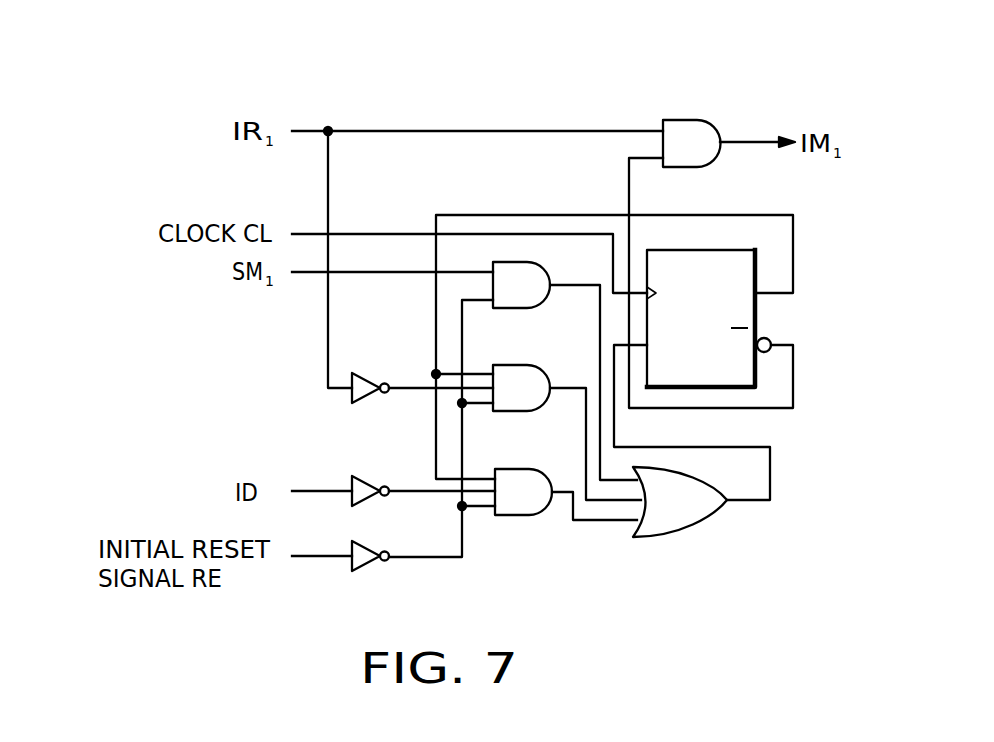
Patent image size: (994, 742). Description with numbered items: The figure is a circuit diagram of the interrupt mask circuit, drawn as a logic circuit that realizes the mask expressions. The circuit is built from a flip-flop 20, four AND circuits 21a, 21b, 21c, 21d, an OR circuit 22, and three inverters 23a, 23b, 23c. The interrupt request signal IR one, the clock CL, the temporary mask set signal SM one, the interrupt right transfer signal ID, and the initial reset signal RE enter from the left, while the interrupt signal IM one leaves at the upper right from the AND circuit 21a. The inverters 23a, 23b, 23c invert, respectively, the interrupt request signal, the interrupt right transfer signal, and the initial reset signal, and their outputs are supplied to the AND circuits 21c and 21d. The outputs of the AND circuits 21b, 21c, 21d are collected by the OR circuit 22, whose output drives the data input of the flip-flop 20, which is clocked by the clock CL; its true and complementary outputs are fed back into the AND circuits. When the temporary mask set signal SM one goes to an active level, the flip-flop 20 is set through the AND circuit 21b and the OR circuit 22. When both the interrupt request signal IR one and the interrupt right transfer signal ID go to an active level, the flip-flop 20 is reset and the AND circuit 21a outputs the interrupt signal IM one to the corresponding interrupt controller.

The flip-flop 20 is at (758, 317).
The AND circuit 21a is at (698, 118).
The AND circuit 21b is at (541, 250).
The AND circuit 21c is at (541, 353).
The AND circuit 21d is at (535, 470).
The OR circuit 22 is at (702, 527).
The inverter 23a is at (369, 374).
The inverter 23b is at (369, 476).
The inverter 23c is at (371, 525).